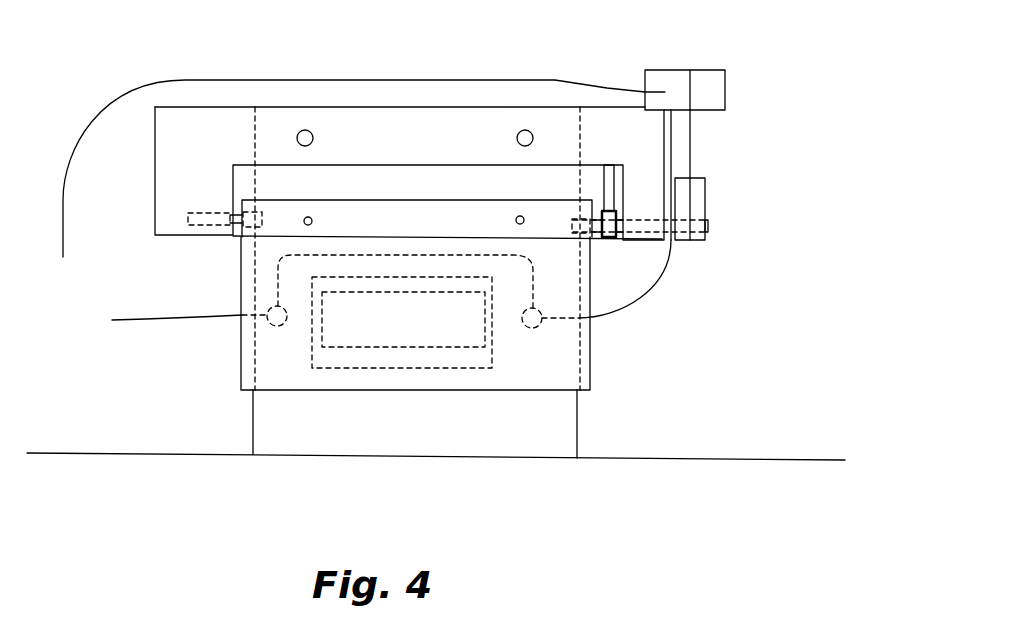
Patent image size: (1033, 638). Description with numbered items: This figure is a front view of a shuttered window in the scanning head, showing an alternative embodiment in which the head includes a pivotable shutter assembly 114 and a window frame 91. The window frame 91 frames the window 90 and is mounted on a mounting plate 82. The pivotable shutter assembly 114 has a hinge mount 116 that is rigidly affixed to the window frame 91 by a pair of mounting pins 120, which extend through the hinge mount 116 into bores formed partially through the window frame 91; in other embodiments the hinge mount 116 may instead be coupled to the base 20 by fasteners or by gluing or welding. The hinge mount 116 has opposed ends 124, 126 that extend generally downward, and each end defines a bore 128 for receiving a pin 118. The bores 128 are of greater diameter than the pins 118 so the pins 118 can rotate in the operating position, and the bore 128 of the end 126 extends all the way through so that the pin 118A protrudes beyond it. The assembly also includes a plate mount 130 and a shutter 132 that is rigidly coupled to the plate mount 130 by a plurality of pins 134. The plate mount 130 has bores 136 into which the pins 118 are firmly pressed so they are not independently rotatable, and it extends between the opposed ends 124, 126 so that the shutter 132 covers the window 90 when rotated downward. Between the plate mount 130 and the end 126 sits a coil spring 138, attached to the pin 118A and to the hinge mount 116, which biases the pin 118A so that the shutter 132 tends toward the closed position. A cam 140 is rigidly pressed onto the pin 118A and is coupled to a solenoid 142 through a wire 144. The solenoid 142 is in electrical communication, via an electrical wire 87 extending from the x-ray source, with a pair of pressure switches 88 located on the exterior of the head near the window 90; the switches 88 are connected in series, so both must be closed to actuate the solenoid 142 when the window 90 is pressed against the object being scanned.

The base 20 is at (57, 303).
The mounting plate 82 is at (142, 452).
The electrical wire 87 is at (102, 125).
The pressure switches 88 is at (277, 328).
The window 90 is at (432, 292).
The window frame 91 is at (577, 438).
The pivotable shutter assembly 114 is at (680, 360).
The hinge mount 116 is at (352, 123).
The pin 118 is at (195, 222).
The pin 118A is at (710, 230).
The mounting pins 120 is at (300, 133).
The end 124 is at (153, 163).
The end 126 is at (672, 168).
The bore 128 is at (210, 212).
The plate mount 130 is at (393, 231).
The shutter 132 is at (350, 392).
The pins 134 is at (313, 216).
The bores 136 is at (258, 215).
The coil spring 138 is at (609, 242).
The cam 140 is at (692, 242).
The solenoid 142 is at (703, 70).
The wire 144 is at (692, 148).